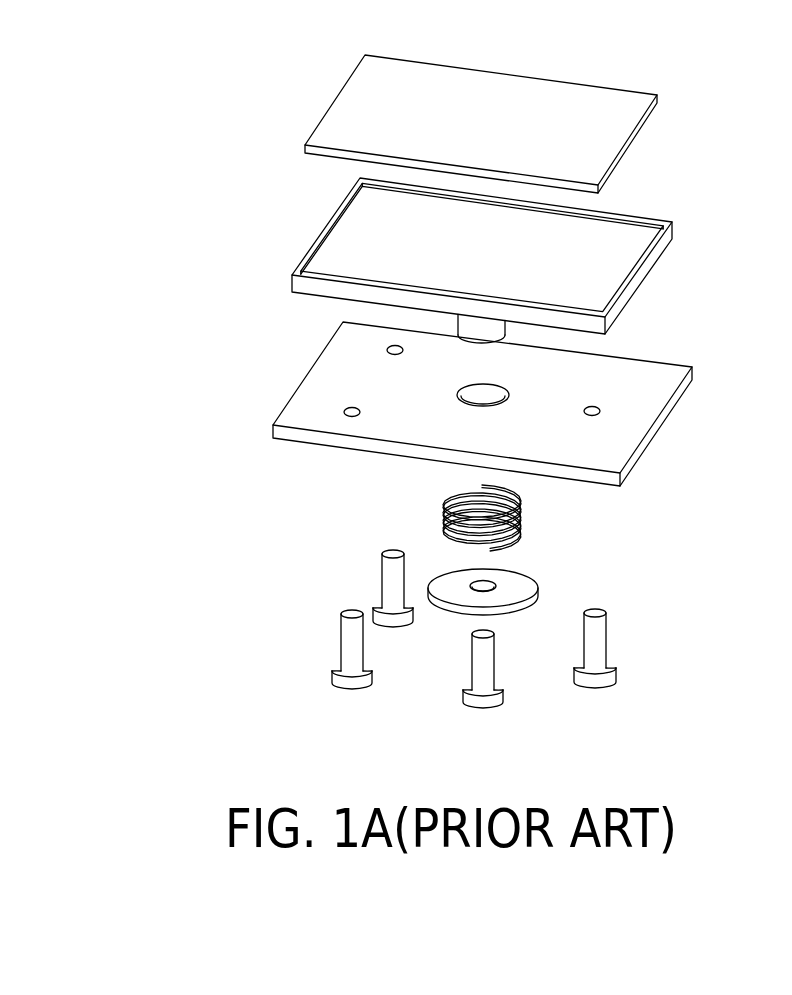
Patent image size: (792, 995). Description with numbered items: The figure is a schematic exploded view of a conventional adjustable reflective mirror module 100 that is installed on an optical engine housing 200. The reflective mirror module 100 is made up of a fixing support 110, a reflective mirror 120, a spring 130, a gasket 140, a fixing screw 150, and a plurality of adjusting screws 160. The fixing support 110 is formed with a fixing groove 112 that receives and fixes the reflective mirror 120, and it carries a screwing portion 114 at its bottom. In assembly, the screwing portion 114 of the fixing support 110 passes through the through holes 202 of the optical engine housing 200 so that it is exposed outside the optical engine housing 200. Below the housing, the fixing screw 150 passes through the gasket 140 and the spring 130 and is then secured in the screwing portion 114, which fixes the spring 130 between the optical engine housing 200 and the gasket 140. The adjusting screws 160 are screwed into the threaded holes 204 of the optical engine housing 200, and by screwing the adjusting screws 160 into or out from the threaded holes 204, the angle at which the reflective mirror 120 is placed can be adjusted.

The adjustable reflective mirror module 100 is at (367, 770).
The fixing support 110 is at (662, 245).
The fixing groove 112 is at (623, 245).
The screwing portion 114 is at (478, 333).
The reflective mirror 120 is at (352, 108).
The spring 130 is at (442, 517).
The gasket 140 is at (523, 583).
The fixing screw 150 is at (487, 670).
The adjusting screws 160 is at (392, 577).
The optical engine housing 200 is at (325, 386).
The through holes 202 is at (487, 393).
The threaded holes 204 is at (390, 350).